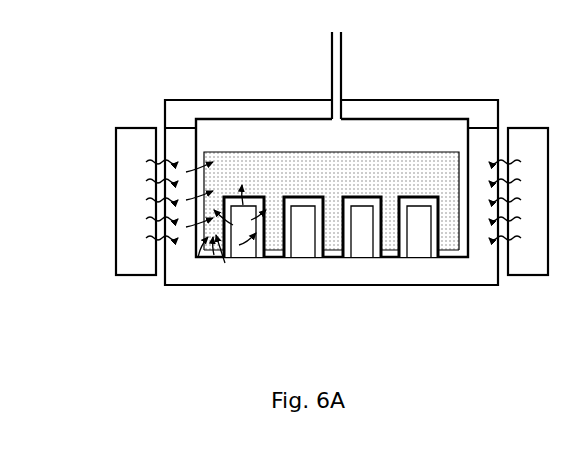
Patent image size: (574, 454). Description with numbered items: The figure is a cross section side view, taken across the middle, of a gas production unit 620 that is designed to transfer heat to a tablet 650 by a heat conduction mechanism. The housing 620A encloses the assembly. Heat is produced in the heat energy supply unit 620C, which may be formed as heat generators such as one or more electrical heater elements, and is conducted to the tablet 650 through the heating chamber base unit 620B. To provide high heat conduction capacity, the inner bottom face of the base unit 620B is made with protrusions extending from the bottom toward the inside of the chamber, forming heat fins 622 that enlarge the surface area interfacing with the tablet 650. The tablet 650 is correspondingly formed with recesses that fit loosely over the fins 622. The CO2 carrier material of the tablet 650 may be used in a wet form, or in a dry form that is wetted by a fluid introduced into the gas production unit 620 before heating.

The gas production unit 620 is at (283, 188).
The outer housing 620A is at (189, 104).
The heating chamber base unit 620B is at (332, 240).
The heat energy supply unit 620C is at (122, 207).
The heat fins 622 is at (418, 233).
The tablet 650 is at (272, 168).